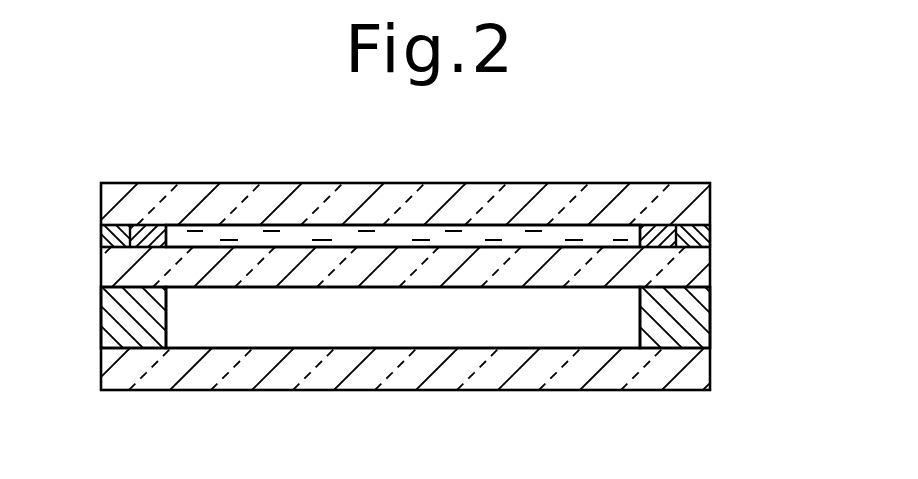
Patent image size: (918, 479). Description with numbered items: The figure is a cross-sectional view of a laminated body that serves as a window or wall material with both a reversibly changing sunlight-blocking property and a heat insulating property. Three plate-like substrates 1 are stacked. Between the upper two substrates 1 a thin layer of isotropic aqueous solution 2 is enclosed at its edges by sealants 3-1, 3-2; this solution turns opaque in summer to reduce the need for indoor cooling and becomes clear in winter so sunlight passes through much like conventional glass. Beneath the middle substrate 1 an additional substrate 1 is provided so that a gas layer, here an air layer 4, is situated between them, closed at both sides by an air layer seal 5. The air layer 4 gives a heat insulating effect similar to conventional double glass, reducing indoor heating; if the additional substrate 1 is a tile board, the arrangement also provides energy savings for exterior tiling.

The substrate 1 is at (433, 200).
The isotropic aqueous solution 2 is at (288, 238).
The sealant 3-1 is at (653, 233).
The sealant 3-2 is at (712, 228).
The air layer 4 is at (510, 315).
The air layer seal 5 is at (688, 320).